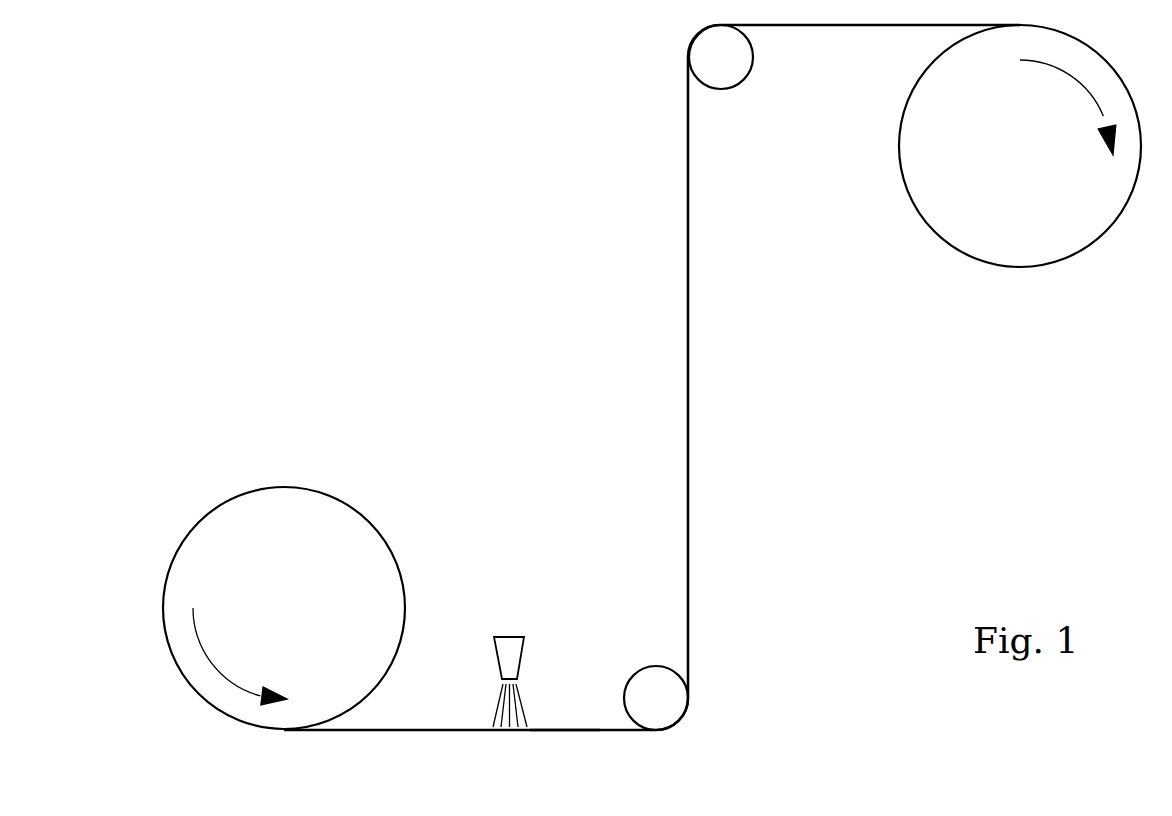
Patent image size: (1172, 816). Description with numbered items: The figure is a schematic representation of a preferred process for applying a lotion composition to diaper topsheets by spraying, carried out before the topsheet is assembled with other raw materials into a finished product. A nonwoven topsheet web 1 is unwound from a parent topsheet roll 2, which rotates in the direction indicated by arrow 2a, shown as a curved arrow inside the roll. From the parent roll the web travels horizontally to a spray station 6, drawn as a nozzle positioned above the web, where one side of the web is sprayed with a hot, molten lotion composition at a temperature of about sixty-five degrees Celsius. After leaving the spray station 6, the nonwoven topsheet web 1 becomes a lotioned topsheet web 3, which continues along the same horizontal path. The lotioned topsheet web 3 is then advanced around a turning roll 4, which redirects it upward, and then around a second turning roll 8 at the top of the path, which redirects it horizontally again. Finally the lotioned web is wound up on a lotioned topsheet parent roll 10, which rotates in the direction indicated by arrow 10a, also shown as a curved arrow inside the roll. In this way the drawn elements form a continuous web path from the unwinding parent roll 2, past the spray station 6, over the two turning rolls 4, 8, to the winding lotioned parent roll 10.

The nonwoven topsheet web 1 is at (458, 732).
The parent topsheet roll 2 is at (272, 578).
The arrow 2a is at (202, 643).
The lotioned topsheet web 3 is at (562, 728).
The turning roll 4 is at (657, 700).
The spray station 6 is at (494, 607).
The turning roll 8 is at (732, 78).
The lotioned topsheet parent roll 10 is at (1011, 198).
The arrow 10a is at (1088, 93).